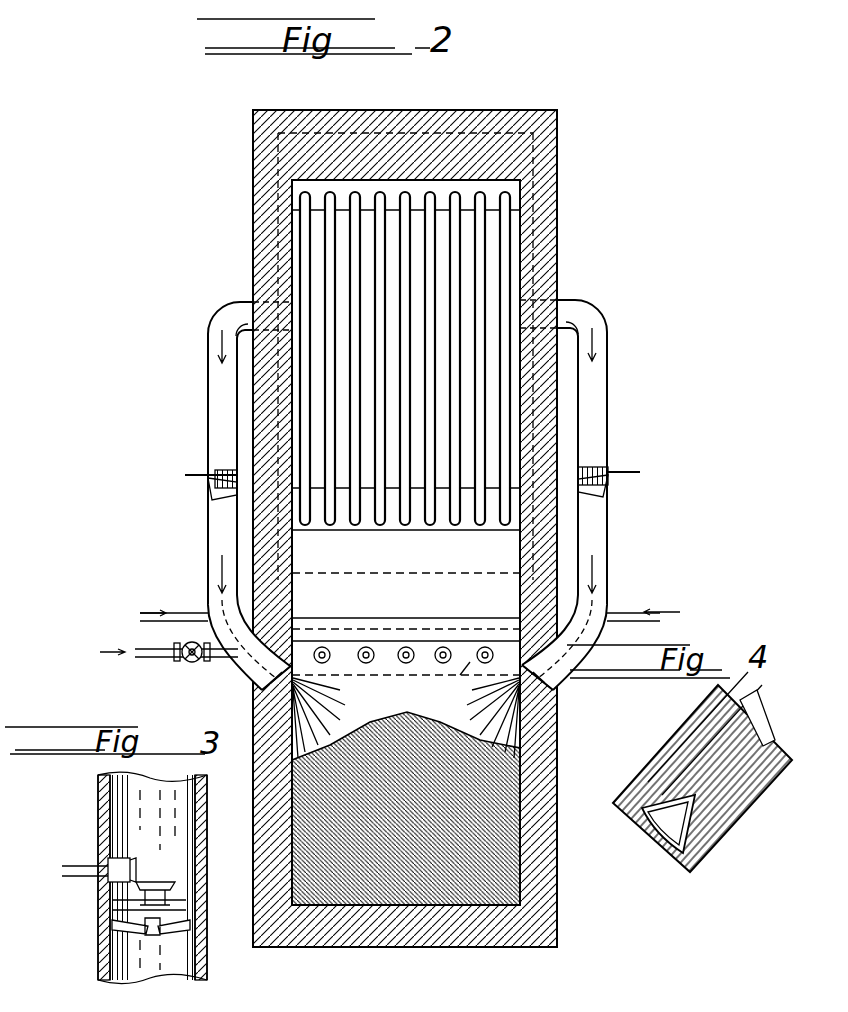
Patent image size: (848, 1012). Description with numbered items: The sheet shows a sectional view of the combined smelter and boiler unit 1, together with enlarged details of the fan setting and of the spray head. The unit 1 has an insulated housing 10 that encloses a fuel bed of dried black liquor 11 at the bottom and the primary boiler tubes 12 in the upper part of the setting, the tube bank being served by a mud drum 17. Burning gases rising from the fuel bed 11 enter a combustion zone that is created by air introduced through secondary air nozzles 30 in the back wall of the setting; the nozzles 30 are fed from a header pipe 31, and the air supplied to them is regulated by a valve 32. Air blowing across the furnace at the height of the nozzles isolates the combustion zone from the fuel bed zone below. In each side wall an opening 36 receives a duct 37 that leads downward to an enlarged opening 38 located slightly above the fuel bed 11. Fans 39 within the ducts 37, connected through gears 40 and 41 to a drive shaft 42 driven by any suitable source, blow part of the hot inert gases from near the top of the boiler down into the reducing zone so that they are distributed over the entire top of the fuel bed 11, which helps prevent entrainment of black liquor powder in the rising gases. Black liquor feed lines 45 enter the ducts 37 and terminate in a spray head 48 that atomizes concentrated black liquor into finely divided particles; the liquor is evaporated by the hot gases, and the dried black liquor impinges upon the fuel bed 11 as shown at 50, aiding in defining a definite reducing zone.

In FIG. 2, the combined smelter and boiler unit 1 is at (246, 239).
In FIG. 2, the insulated housing 10 is at (268, 150).
In FIG. 2, the fuel bed of dried black liquor 11 is at (500, 865).
In FIG. 2, the primary boiler tubes 12 is at (438, 292).
In FIG. 2, the mud drum 17 is at (495, 556).
In FIG. 2, the secondary air nozzles 30 is at (440, 648).
In FIG. 2, the header pipe 31 is at (426, 685).
In FIG. 2, the valve 32 is at (187, 662).
In FIG. 2, the opening 36 is at (272, 317).
In FIG. 2, the ducts 37 is at (214, 395).
In FIG. 3, the ducts 37 is at (104, 958).
In FIG. 4, the ducts 37 is at (727, 826).
In FIG. 2, the enlarged openings 38 is at (270, 687).
In FIG. 2, the fans 39 is at (211, 502).
In FIG. 3, the fans 39 is at (185, 930).
In FIG. 3, the gear 40 is at (165, 884).
In FIG. 3, the gear 41 is at (138, 858).
In FIG. 2, the drive shaft 42 is at (190, 475).
In FIG. 3, the drive shaft 42 is at (88, 880).
In FIG. 2, the black liquor feed lines 45 is at (205, 612).
In FIG. 4, the black liquor feed lines 45 is at (765, 745).
In FIG. 2, the spray head 48 is at (260, 678).
In FIG. 4, the spray head 48 is at (672, 845).
In FIG. 2, the dried black liquor impinging on fuel bed 50 is at (348, 722).